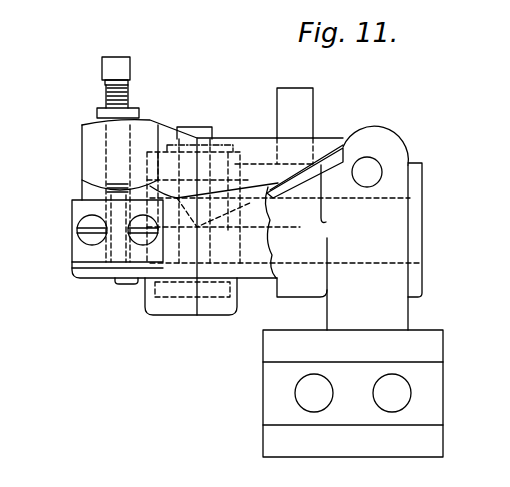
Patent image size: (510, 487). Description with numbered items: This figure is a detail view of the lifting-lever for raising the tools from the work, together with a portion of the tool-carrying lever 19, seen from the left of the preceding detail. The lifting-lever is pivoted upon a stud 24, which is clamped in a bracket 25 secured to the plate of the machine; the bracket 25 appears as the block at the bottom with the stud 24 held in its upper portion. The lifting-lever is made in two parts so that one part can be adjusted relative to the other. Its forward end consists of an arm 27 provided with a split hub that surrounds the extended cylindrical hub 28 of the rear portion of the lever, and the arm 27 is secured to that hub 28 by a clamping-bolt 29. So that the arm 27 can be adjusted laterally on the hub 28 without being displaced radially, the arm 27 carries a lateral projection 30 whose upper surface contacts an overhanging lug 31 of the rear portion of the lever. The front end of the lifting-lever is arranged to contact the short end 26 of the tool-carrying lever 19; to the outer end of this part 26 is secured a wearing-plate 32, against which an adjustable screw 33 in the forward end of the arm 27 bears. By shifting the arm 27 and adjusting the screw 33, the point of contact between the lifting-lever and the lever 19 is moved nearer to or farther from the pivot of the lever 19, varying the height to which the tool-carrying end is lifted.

The tool-carrying lever 19 is at (266, 283).
The stud 24 is at (424, 222).
The bracket 25 is at (439, 333).
The short end of the lever 26 is at (128, 273).
The arm 27 is at (140, 127).
The cylindrical hub 28 is at (137, 279).
The clamping-bolt 29 is at (197, 119).
The lateral projection 30 is at (246, 148).
The overhanging lug 31 is at (303, 108).
The wearing-plate 32 is at (77, 251).
The adjustable screw 33 is at (125, 69).